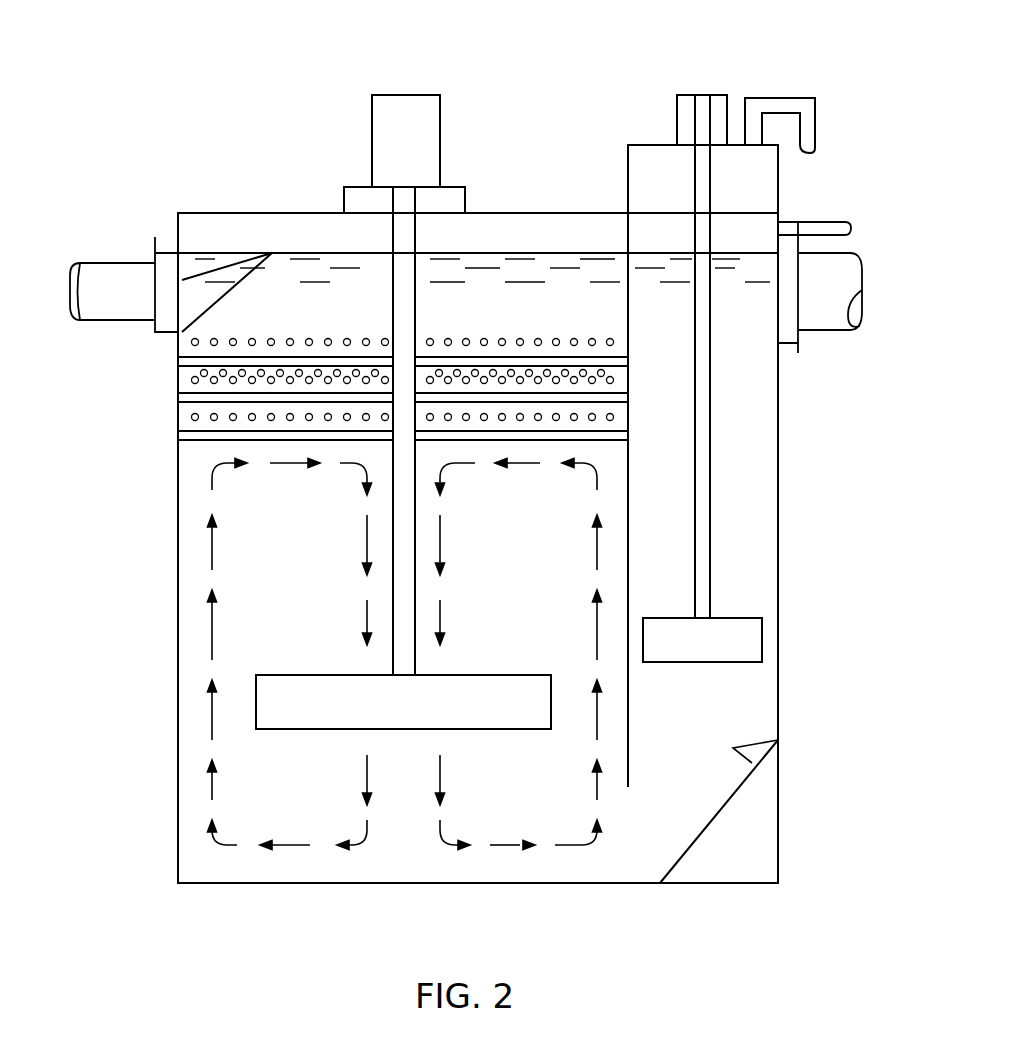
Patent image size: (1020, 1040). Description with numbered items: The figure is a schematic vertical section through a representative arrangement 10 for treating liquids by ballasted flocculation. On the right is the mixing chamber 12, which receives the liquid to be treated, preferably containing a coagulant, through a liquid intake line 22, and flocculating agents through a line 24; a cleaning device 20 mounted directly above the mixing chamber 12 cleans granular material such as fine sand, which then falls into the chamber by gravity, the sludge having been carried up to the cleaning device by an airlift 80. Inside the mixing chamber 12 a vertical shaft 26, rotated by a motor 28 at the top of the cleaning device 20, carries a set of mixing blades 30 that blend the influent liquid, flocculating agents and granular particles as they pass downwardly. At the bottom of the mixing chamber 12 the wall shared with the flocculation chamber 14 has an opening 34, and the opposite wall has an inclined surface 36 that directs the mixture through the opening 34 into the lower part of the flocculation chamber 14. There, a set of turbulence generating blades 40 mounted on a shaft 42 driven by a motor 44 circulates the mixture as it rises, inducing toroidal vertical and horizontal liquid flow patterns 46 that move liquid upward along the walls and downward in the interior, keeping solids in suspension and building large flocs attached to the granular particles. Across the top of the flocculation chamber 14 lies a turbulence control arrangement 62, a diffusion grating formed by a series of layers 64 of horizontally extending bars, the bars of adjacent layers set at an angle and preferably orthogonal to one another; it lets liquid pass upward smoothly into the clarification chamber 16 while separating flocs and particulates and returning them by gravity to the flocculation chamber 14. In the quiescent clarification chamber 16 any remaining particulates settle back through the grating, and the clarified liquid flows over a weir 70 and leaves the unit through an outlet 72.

The arrangement for treatment of liquids 10 is at (154, 157).
The mixing chamber 12 is at (792, 559).
The flocculation chamber 14 is at (164, 651).
The clarification chamber 16 is at (166, 208).
The cleaning device 20 is at (792, 182).
The liquid intake line 22 is at (828, 318).
The line 24 is at (820, 232).
The vertical shaft 26 is at (712, 482).
The motor 28 is at (703, 108).
The mixing blades 30 is at (748, 638).
The opening 34 is at (637, 835).
The inclined surface 36 is at (733, 748).
The turbulence generating blades 40 is at (256, 722).
The shaft 42 is at (392, 573).
The motor 44 is at (400, 108).
The toroidal liquid flow patterns 46 is at (210, 838).
The turbulence control arrangement 62 is at (164, 385).
The layers 64 is at (190, 342).
The weir 70 is at (246, 275).
The outlet 72 is at (95, 277).
The airlift 80 is at (782, 108).